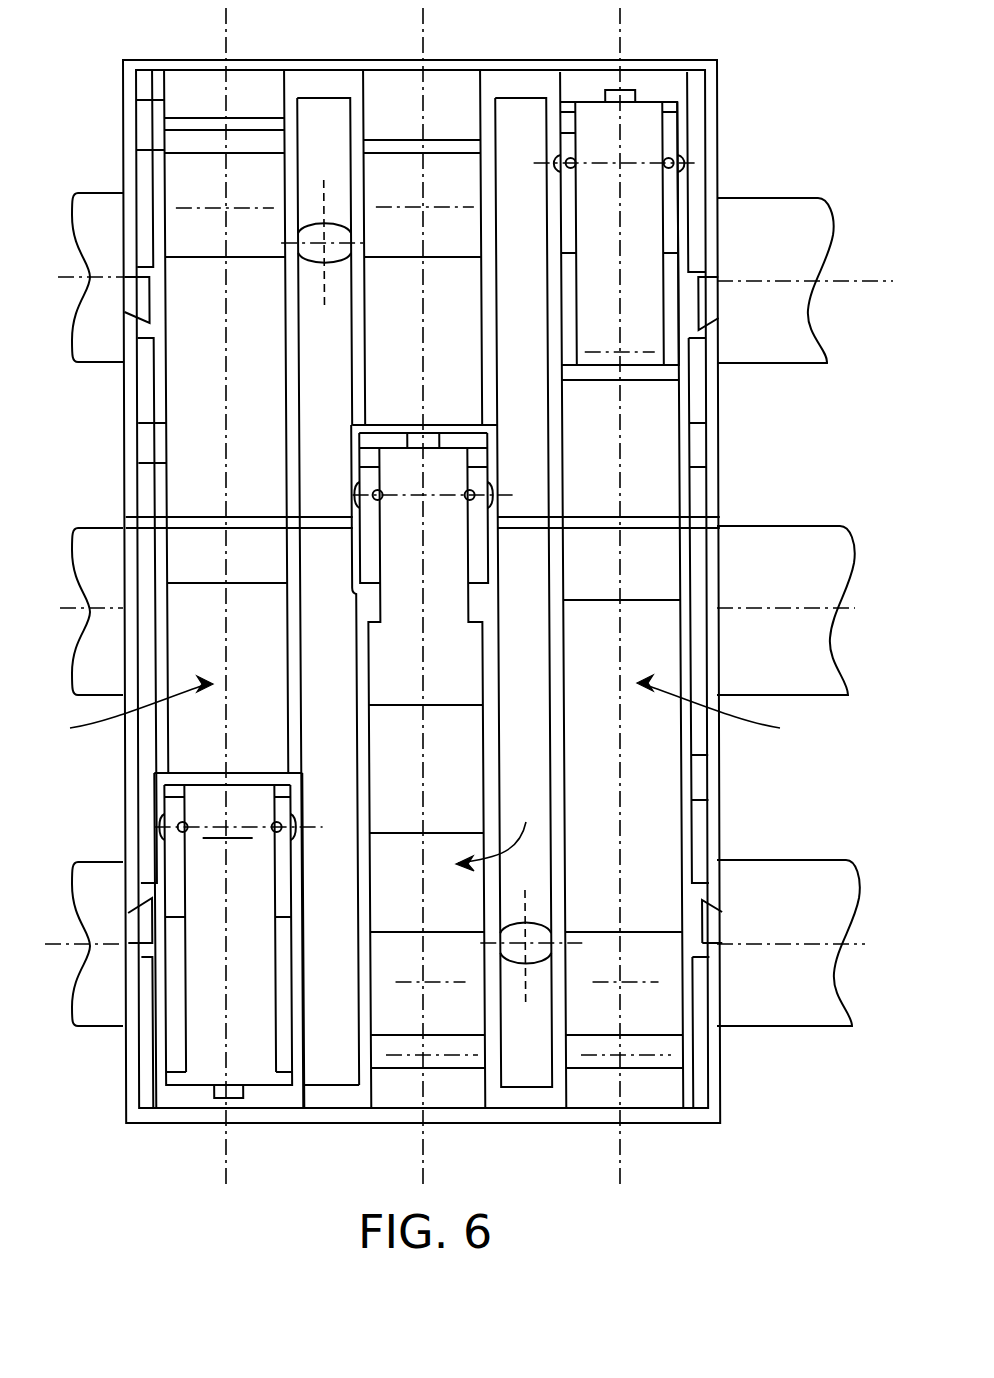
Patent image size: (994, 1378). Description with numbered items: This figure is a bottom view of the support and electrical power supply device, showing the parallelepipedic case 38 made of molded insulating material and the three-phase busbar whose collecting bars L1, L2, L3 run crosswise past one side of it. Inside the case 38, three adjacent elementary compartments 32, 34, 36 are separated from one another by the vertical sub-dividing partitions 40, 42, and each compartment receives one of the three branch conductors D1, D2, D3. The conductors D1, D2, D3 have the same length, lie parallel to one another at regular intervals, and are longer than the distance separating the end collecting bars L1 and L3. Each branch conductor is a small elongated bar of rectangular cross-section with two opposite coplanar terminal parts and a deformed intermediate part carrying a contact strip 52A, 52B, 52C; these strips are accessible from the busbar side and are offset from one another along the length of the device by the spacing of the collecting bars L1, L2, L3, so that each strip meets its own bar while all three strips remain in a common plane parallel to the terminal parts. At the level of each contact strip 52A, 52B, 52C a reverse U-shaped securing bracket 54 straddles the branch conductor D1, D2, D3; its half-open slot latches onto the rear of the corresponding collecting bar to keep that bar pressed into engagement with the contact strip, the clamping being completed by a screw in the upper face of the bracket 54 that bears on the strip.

The compartment 32 is at (293, 1038).
The compartment 34 is at (492, 1030).
The compartment 36 is at (683, 1068).
The case 38 is at (132, 1102).
The vertical sub-dividing partition 40 is at (332, 1038).
The vertical sub-dividing partition 42 is at (516, 108).
The contact strip 52A is at (620, 135).
The contact strip 52B is at (468, 660).
The contact strip 52C is at (198, 1038).
The securing bracket 54 is at (669, 177).
The collecting bar L1 is at (802, 230).
The collecting bar L2 is at (800, 555).
The collecting bar L3 is at (800, 905).
The branch conductor D1 is at (726, 709).
The branch conductor D2 is at (501, 833).
The branch conductor D3 is at (122, 710).